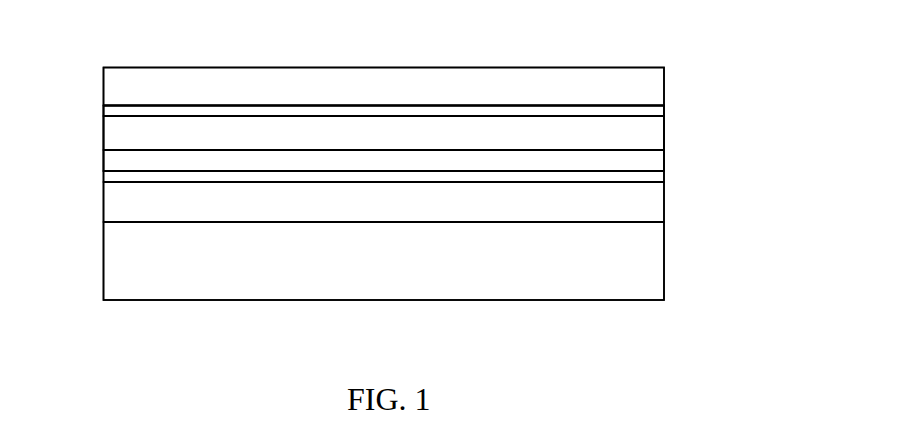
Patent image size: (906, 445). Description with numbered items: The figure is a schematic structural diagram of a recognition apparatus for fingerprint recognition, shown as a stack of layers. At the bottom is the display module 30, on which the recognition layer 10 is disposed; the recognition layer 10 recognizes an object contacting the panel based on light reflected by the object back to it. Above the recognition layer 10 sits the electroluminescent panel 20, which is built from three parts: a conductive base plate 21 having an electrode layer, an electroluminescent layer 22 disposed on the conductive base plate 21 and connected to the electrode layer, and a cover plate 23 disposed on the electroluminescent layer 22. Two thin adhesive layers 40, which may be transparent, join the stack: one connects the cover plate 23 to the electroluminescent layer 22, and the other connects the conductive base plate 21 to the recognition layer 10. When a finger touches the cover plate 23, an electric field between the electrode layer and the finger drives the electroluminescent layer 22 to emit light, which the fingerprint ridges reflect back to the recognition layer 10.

The recognition layer 10 is at (664, 204).
The electroluminescent panel 20 is at (762, 127).
The conductive base plate 21 is at (664, 162).
The electroluminescent layer 22 is at (664, 134).
The cover plate 23 is at (664, 88).
The display module 30 is at (664, 262).
The adhesive layer 40 is at (103, 114).